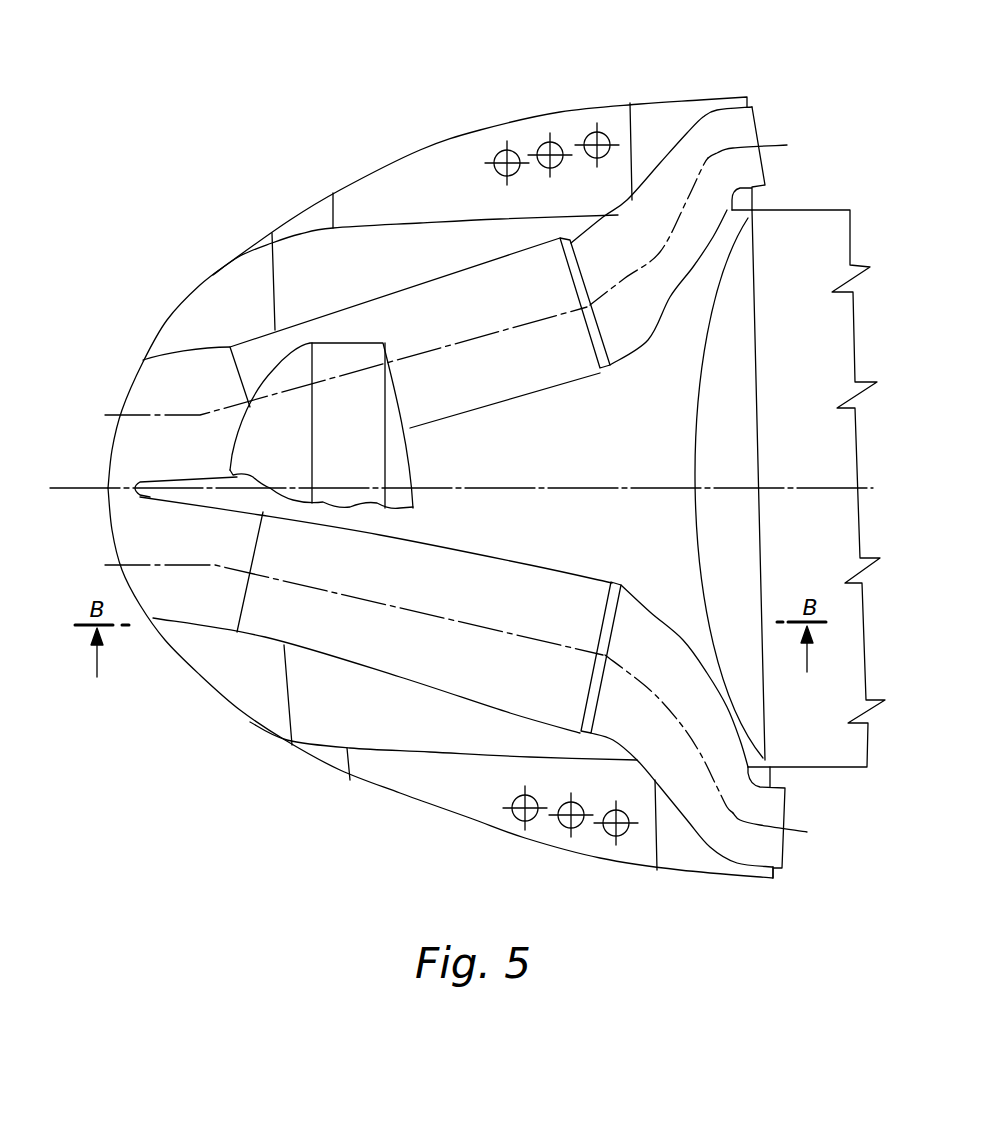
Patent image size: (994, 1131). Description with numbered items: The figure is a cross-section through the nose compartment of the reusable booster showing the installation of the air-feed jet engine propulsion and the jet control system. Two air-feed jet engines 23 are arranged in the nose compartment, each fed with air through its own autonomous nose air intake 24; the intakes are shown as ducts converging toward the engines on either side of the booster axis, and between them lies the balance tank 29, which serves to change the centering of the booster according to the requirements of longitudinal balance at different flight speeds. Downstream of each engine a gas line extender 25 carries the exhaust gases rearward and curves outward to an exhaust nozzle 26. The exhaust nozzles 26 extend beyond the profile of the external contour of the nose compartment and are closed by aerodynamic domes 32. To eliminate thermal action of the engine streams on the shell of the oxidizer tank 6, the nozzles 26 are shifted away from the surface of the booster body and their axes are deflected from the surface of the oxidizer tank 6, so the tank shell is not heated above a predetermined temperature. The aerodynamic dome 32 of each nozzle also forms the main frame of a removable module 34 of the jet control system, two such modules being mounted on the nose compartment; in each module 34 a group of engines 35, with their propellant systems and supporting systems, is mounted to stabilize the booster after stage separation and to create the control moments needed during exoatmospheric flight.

The oxidizer tank 6 is at (838, 747).
The air-feed jet engine 23 is at (333, 637).
The air intake 24 is at (192, 382).
The gas line extender 25 is at (678, 185).
The exhaust nozzle 26 is at (748, 135).
The balance tank 29 is at (270, 383).
The aerodynamic dome 32 is at (648, 130).
The removable module 34 is at (445, 183).
The engine 35 is at (547, 147).